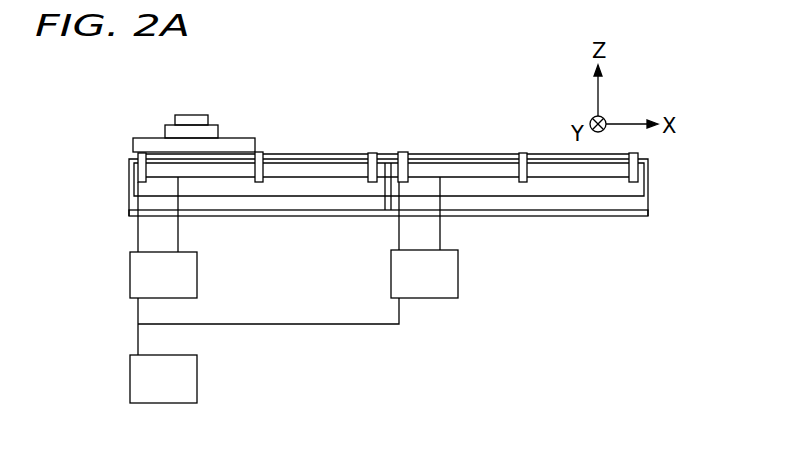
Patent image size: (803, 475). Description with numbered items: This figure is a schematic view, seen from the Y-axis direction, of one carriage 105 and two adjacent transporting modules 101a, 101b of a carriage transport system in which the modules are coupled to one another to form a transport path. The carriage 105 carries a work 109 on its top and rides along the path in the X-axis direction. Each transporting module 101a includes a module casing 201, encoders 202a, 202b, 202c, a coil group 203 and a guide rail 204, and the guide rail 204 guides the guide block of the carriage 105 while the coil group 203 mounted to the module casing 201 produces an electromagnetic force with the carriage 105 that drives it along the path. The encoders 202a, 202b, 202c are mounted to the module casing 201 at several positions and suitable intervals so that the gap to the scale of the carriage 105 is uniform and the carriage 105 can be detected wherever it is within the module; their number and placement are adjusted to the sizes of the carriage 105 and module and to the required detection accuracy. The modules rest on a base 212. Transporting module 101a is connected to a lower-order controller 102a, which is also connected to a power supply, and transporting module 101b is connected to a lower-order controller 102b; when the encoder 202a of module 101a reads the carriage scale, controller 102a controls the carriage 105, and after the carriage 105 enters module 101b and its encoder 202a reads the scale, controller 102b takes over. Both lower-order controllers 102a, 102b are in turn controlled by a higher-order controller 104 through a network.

The carriage 105 is at (228, 122).
The work 109 is at (192, 120).
The guide rail 204 is at (135, 156).
The encoder 202a is at (142, 170).
The encoder 202b is at (259, 153).
The encoder 202c is at (372, 153).
The module casing 201 is at (331, 202).
The coil group 203 is at (233, 190).
The base 212 is at (648, 212).
The transporting module 101a is at (285, 242).
The transporting module 101b is at (543, 240).
The lower-order controller 102a is at (132, 282).
The lower-order controller 102b is at (393, 280).
The higher-order controller 104 is at (132, 380).